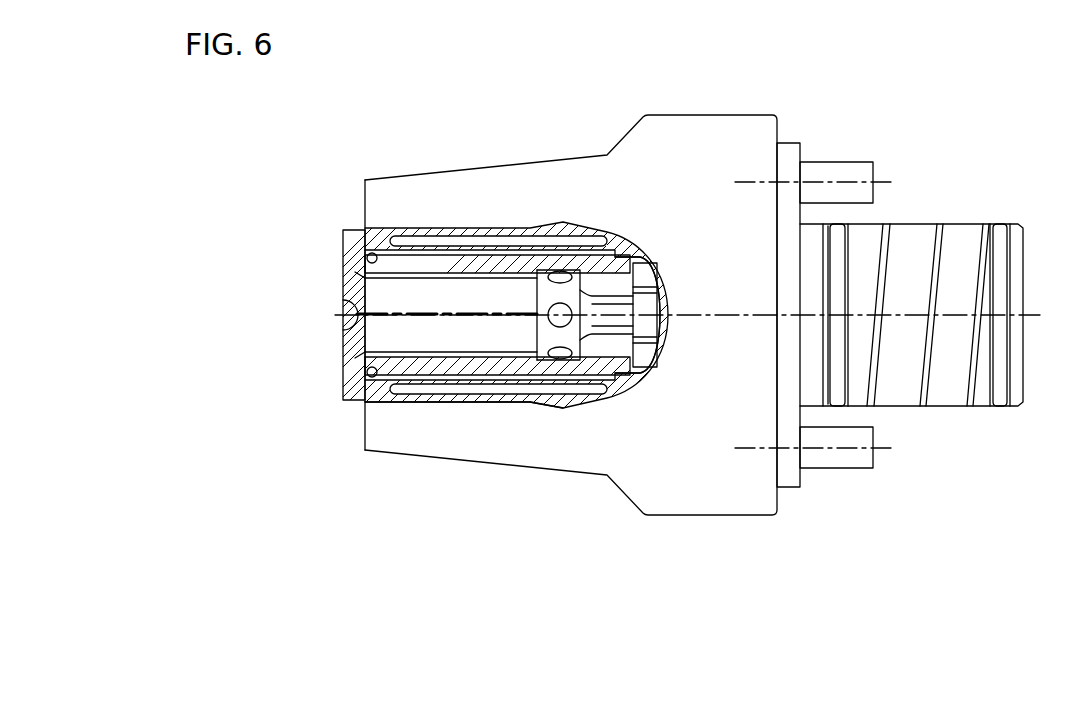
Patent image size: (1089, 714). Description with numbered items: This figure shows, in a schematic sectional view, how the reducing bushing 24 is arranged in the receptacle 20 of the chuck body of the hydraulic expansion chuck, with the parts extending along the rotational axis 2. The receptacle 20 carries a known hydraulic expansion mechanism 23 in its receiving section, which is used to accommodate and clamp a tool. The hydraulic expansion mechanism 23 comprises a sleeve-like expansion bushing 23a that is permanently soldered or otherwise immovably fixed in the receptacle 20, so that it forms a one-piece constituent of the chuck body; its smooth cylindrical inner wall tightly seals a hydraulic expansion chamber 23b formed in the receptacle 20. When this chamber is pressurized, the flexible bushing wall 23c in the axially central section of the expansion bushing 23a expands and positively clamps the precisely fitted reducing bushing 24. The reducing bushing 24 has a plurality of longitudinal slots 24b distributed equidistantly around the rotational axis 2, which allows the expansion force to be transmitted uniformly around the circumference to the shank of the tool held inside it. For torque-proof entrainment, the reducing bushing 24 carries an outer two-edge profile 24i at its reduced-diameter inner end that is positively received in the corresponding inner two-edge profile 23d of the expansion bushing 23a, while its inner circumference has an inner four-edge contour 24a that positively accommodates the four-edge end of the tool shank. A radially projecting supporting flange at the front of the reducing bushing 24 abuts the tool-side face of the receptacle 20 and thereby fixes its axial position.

The rotational axis 2 is at (953, 320).
The receptacle 20 is at (683, 513).
The hydraulic expansion mechanism 23 is at (382, 409).
The expansion bushing 23a is at (427, 408).
The hydraulic expansion chamber 23b is at (453, 387).
The flexible bushing wall 23c is at (507, 387).
The inner two-edge profile 23d is at (636, 400).
The reducing bushing 24 is at (402, 258).
The inner four-edge contour 24a is at (590, 283).
The longitudinal slots 24b is at (385, 318).
The outer two-edge profile 24i is at (633, 255).